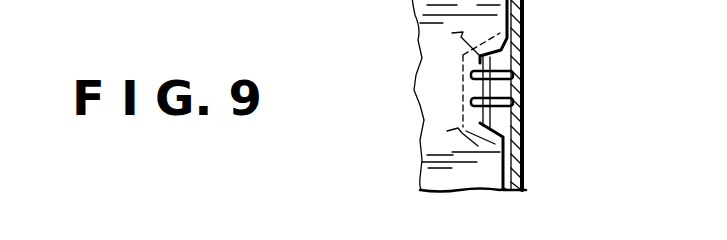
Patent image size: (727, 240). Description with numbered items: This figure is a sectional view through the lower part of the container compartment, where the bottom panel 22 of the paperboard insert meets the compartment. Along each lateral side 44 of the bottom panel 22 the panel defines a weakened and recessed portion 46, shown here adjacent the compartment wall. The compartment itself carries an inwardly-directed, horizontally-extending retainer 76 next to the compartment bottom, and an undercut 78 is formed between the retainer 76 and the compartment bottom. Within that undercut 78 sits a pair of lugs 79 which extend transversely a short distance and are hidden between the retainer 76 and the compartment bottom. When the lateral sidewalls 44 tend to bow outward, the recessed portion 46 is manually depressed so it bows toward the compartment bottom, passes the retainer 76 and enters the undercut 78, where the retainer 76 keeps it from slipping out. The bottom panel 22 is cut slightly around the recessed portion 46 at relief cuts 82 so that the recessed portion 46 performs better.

The bottom panel 22 is at (441, 175).
The lateral side 44 is at (527, 183).
The weakened and recessed portion 46 is at (527, 120).
The retainer 76 is at (462, 93).
The undercut 78 is at (510, 53).
The lugs 79 is at (517, 100).
The relief cuts 82 is at (452, 33).